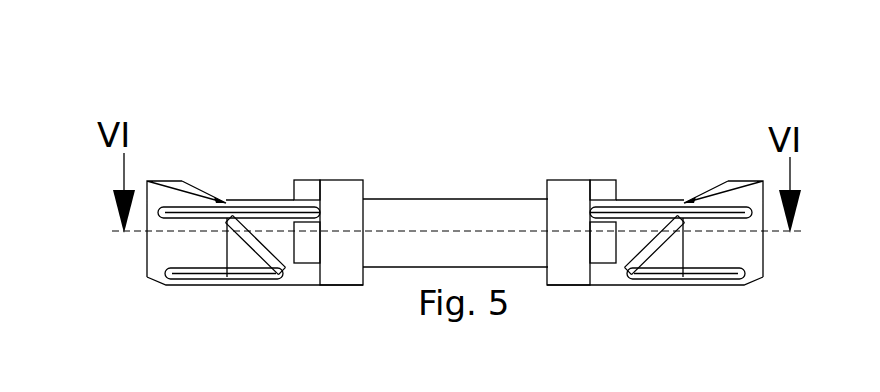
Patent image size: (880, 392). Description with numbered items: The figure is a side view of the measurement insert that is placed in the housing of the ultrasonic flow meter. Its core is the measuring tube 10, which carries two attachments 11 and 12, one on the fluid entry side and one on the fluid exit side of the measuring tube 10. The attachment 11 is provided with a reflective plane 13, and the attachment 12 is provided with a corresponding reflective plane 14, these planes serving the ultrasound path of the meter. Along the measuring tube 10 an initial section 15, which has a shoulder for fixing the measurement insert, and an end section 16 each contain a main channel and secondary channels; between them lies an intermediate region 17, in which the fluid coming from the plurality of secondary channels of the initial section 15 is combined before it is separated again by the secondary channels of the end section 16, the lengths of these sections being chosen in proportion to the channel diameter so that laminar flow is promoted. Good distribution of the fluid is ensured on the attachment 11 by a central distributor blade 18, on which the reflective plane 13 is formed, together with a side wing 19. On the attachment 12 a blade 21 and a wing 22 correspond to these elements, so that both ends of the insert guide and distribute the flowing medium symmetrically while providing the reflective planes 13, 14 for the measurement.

The measuring tube 10 is at (305, 88).
The attachment 11 is at (590, 88).
The attachment 12 is at (150, 88).
The reflective plane 13 is at (650, 250).
The reflective plane 14 is at (256, 256).
The initial section 15 is at (560, 192).
The end section 16 is at (342, 197).
The intermediate region 17 is at (390, 212).
The central distributor blade 18 is at (740, 250).
The side wing 19 is at (660, 203).
The blade 21 is at (162, 262).
The wing 22 is at (248, 206).